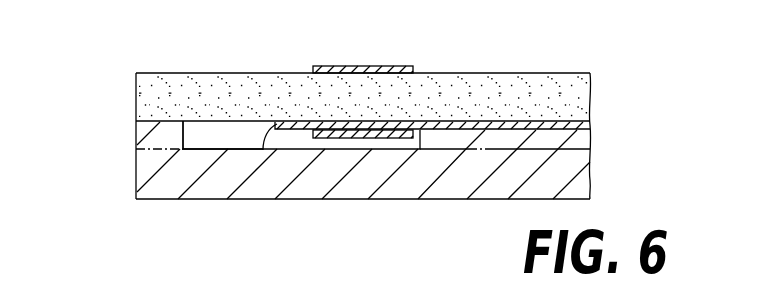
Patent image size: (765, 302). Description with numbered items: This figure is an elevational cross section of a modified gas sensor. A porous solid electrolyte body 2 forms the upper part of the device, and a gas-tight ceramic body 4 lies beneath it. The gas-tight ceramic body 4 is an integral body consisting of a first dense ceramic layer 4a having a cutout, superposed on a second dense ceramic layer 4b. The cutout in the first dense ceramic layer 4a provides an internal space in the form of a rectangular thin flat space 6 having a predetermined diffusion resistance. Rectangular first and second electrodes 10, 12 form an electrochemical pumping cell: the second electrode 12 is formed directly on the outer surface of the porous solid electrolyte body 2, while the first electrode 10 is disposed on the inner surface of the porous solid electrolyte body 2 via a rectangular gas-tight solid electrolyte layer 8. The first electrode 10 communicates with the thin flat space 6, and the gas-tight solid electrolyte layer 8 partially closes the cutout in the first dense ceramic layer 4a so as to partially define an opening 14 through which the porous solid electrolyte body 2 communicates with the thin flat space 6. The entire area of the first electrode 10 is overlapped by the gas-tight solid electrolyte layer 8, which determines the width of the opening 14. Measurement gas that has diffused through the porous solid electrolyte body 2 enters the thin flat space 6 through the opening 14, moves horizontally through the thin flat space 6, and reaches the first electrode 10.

The porous solid electrolyte body 2 is at (193, 82).
The second electrode 12 is at (380, 66).
The gas-tight ceramic body 4 is at (310, 157).
The first dense ceramic layer 4a is at (155, 134).
The second dense ceramic layer 4b is at (147, 168).
The thin flat space 6 is at (207, 140).
The opening 14 is at (263, 150).
The gas-tight solid electrolyte layer 8 is at (468, 129).
The first electrode 10 is at (357, 138).